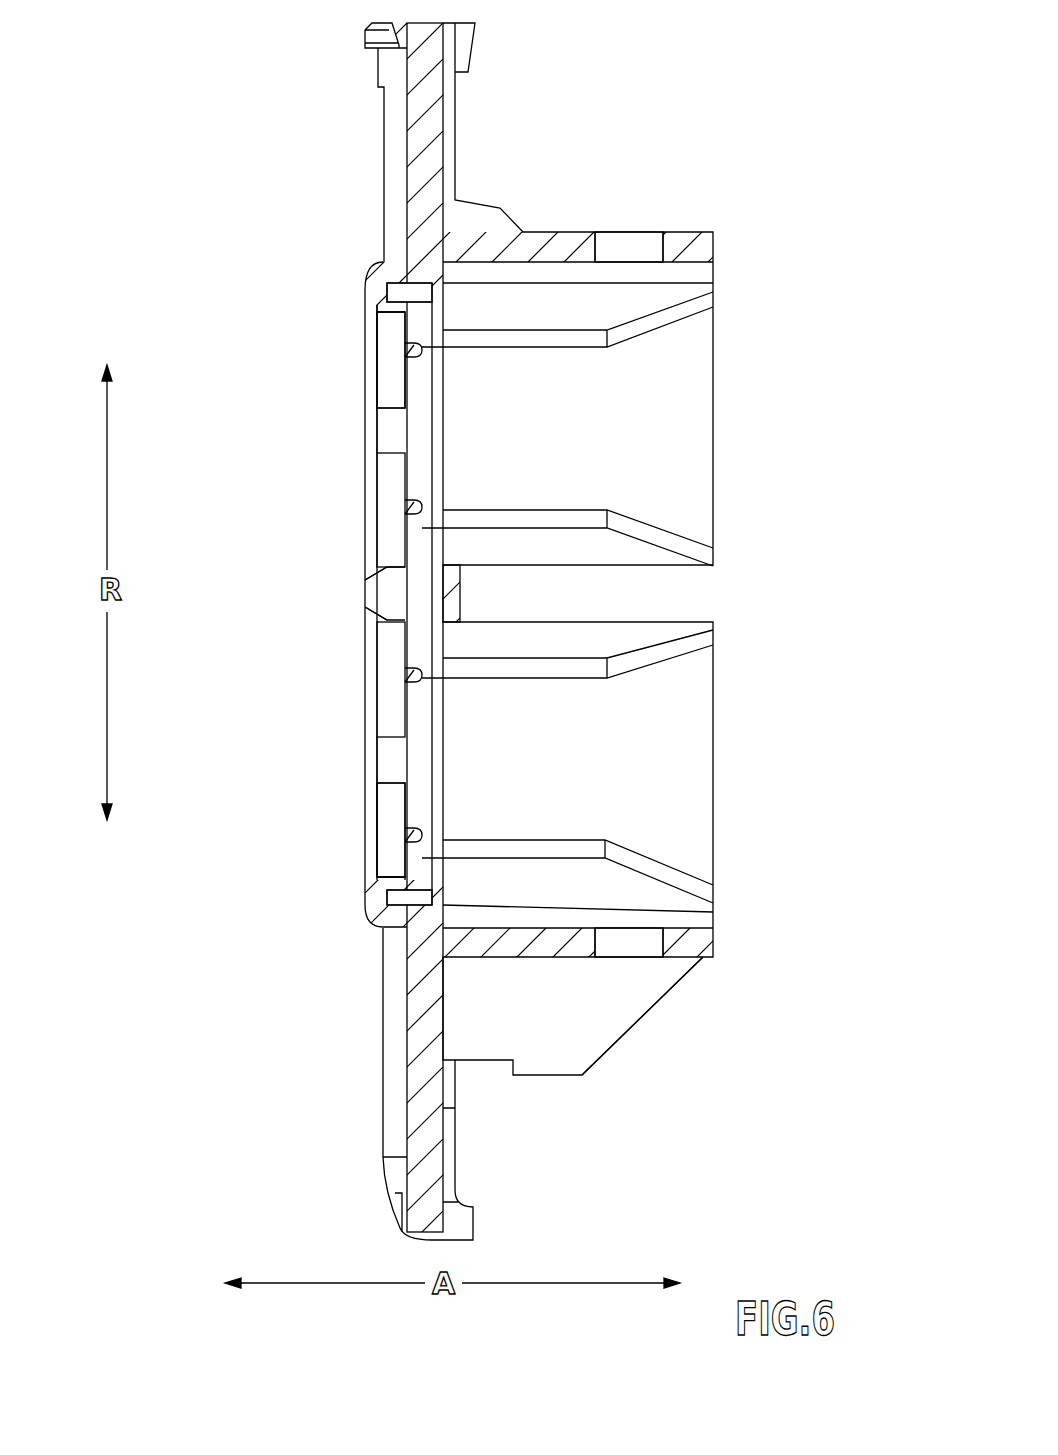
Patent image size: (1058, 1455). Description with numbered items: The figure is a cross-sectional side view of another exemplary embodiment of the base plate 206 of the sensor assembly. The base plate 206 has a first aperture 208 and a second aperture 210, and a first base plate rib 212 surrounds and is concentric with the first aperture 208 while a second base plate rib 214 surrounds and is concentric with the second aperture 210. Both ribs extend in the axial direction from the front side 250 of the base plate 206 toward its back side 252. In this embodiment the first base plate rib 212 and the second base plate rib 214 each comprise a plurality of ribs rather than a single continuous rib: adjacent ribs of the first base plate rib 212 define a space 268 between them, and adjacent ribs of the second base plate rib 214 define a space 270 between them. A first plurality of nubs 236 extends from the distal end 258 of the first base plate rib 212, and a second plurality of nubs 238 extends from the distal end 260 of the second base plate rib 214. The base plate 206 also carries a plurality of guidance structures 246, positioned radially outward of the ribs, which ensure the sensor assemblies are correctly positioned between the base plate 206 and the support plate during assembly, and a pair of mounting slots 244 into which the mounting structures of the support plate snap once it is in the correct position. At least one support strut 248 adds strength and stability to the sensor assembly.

The base plate 206 is at (250, 82).
The first aperture 208 is at (380, 385).
The second aperture 210 is at (380, 798).
The first base plate rib 212 is at (392, 322).
The second base plate rib 214 is at (392, 632).
The first plurality of nubs 236 is at (422, 348).
The second plurality of nubs 238 is at (422, 683).
The mounting slots 244 is at (626, 250).
The guidance structures 246 is at (692, 302).
The support strut 248 is at (612, 1018).
The front side 250 is at (252, 190).
The back side 252 is at (662, 98).
The distal end 258 is at (430, 322).
The distal end 260 is at (440, 662).
The space 268 is at (392, 428).
The space 270 is at (390, 757).